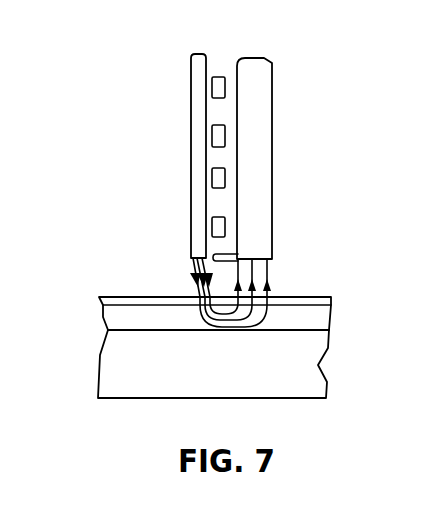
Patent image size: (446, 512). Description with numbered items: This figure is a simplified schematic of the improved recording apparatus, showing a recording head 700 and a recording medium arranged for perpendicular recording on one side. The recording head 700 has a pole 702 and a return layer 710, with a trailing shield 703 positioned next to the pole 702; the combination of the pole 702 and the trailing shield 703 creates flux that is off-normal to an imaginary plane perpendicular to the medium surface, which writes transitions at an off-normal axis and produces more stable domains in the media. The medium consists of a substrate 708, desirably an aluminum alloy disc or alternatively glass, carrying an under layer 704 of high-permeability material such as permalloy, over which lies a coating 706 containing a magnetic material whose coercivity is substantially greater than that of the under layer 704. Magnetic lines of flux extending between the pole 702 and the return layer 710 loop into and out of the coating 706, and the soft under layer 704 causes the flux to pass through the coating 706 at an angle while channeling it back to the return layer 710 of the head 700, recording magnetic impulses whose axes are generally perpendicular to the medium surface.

The recording head 700 is at (104, 101).
The pole 702 is at (206, 60).
The trailing shield 703 is at (232, 254).
The under layer 704 is at (103, 317).
The coating 706 is at (126, 297).
The substrate 708 is at (186, 388).
The return layer (P1) 710 is at (272, 183).